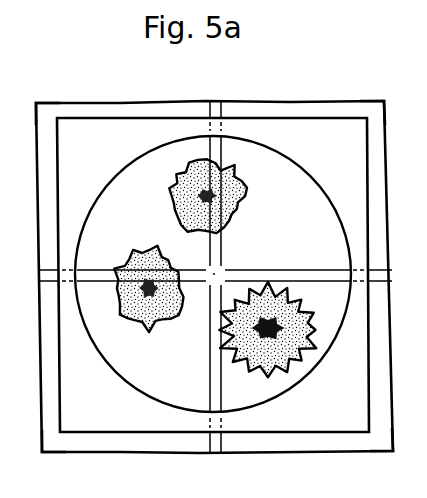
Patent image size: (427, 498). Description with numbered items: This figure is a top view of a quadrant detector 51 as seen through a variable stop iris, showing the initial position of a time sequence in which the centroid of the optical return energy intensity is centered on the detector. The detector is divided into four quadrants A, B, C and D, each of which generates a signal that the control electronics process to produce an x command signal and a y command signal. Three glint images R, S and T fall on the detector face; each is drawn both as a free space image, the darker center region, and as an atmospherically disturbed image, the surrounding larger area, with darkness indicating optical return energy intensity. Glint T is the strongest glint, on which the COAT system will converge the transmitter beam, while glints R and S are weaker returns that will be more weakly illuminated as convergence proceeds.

The quadrant detector 51 is at (368, 120).
The quadrant A is at (343, 110).
The quadrant B is at (355, 445).
The quadrant C is at (41, 446).
The quadrant D is at (52, 108).
The glint image R is at (240, 178).
The glint image S is at (130, 263).
The glint image T is at (305, 316).